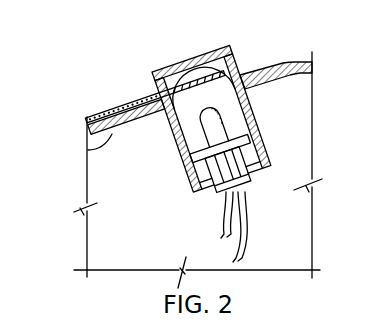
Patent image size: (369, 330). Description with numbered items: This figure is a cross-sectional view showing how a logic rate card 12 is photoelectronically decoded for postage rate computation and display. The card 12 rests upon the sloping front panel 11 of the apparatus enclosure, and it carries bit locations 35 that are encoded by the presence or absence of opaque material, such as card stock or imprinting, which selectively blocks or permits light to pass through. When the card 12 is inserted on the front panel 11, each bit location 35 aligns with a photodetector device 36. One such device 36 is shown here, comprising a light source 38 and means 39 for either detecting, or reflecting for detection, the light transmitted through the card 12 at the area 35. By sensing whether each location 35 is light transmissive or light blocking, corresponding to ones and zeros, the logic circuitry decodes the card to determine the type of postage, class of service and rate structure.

The sloping front panel 11 is at (88, 150).
The logic rate card 12 is at (110, 110).
The bit locations 35 is at (233, 58).
The photodetector device 36 is at (183, 63).
The light source 38 is at (185, 151).
The means for detecting or reflecting light 39 is at (150, 80).